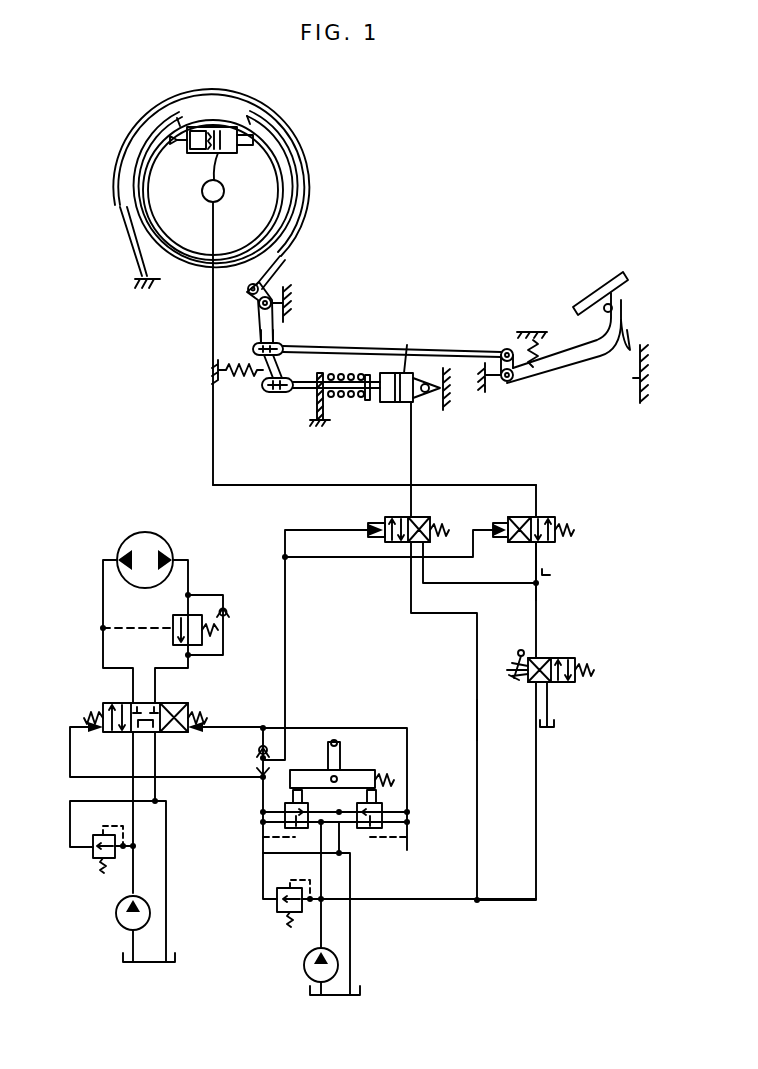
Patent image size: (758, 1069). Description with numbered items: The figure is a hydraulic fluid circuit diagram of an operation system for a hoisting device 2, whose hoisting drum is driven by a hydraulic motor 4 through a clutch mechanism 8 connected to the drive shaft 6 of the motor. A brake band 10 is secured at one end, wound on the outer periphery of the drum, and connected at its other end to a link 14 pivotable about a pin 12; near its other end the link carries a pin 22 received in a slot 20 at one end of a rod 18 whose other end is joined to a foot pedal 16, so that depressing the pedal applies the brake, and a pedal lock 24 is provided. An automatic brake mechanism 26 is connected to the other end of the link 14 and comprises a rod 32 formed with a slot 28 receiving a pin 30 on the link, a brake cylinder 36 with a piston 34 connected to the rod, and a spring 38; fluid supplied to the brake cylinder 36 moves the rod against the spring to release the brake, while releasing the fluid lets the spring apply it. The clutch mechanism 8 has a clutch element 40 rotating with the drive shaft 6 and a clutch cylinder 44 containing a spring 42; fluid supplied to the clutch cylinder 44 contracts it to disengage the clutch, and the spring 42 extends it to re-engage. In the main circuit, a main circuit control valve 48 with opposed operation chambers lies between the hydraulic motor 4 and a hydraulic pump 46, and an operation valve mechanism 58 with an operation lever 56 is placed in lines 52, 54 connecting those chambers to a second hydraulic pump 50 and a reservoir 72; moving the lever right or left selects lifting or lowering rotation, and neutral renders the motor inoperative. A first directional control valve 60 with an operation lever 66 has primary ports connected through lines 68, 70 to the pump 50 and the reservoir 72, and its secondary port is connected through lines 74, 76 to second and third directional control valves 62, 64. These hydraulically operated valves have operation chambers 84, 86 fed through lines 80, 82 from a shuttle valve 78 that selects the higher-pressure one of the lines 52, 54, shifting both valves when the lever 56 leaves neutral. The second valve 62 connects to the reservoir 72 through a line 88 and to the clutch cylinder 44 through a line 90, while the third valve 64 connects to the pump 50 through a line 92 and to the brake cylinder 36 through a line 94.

The hoisting device 2 is at (266, 118).
The hydraulic motor 4 is at (124, 534).
The drive shaft 6 is at (202, 191).
The clutch mechanism 8 is at (230, 126).
The brake band 10 is at (311, 200).
The pin 12 is at (280, 291).
The link 14 is at (256, 305).
The foot pedal 16 is at (573, 360).
The rod 18 is at (352, 347).
The slot 20 is at (281, 343).
The pin 22 is at (260, 334).
The pedal lock 24 is at (613, 310).
The automatic brake mechanism 26 is at (320, 414).
The slot 28 is at (280, 393).
The pin 30 is at (262, 394).
The rod 32 is at (302, 391).
The piston 34 is at (418, 347).
The brake cylinder 36 is at (391, 404).
The spring 38 is at (344, 400).
The clutch element 40 is at (283, 150).
The spring 42 is at (194, 130).
The clutch cylinder 44 is at (212, 128).
The hydraulic pump 46 is at (117, 915).
The main circuit control valve 48 is at (175, 703).
The hydraulic pump 50 is at (304, 970).
The line 52 is at (338, 728).
The line 54 is at (203, 777).
The operation lever 56 is at (329, 748).
The operation valve mechanism 58 is at (362, 770).
The first directional control valve 60 is at (564, 656).
The second directional control valve 62 is at (547, 517).
The third directional control valve 64 is at (420, 517).
The operation lever 66 is at (508, 668).
The line 68 is at (537, 862).
The line 70 is at (550, 709).
The reservoir 72 is at (152, 963).
The line 74 is at (540, 587).
The line 76 is at (476, 584).
The shuttle valve 78 is at (256, 760).
The line 80 is at (326, 557).
The line 82 is at (298, 530).
The operation chamber 84 is at (500, 523).
The operation chamber 86 is at (368, 523).
The line 88 is at (548, 556).
The line 90 is at (460, 485).
The line 92 is at (476, 780).
The line 94 is at (417, 470).